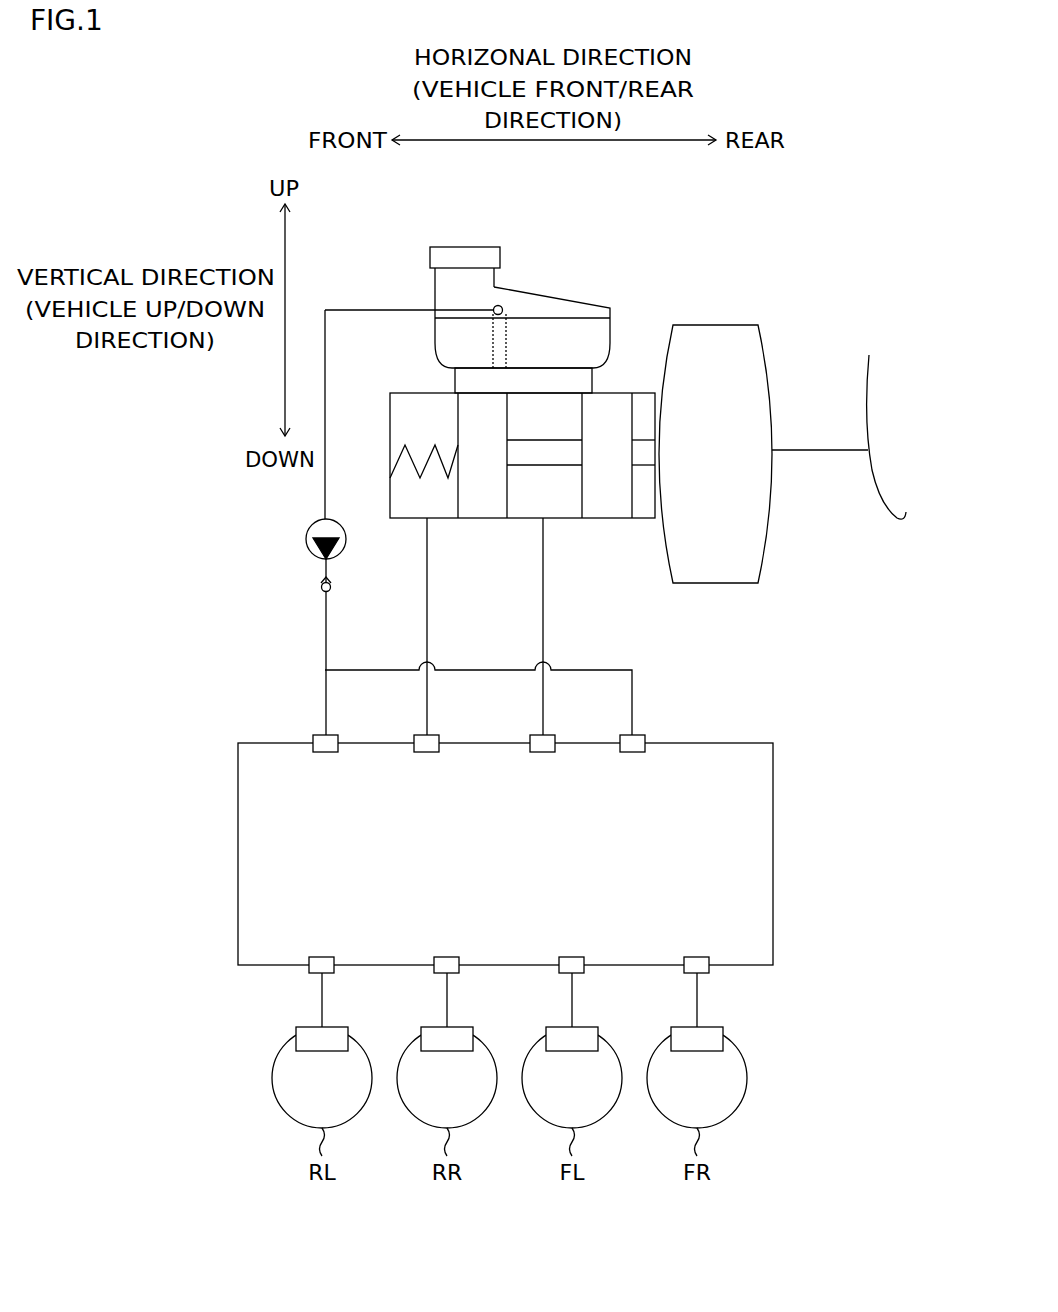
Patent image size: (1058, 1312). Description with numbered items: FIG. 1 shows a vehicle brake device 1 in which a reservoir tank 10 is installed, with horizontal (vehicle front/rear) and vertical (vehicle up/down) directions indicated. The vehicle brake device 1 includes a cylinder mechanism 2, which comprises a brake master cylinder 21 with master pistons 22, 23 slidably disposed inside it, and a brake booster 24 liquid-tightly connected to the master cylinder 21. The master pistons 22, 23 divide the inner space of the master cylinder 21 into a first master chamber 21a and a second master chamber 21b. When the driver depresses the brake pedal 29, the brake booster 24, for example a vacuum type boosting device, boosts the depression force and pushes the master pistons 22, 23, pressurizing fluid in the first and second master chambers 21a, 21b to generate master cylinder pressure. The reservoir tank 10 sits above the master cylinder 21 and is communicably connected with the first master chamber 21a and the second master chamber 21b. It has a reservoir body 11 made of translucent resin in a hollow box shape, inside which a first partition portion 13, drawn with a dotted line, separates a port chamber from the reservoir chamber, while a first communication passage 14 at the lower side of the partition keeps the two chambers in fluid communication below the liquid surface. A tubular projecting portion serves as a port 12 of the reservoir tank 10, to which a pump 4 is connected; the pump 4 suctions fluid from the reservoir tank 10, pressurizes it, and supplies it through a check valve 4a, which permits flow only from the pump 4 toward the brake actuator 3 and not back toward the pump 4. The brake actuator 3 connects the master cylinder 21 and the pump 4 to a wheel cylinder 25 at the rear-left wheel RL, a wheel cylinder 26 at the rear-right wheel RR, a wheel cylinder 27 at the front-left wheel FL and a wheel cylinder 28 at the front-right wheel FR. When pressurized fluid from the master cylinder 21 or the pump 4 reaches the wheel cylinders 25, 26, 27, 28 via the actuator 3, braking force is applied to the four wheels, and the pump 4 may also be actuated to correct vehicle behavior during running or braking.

The vehicle brake device 1 is at (882, 254).
The cylinder mechanism 2 is at (392, 360).
The brake actuator 3 is at (731, 742).
The pump 4 is at (318, 524).
The check valve 4a is at (321, 587).
The reservoir tank 10 is at (612, 246).
The reservoir body 11 is at (546, 295).
The port 12 is at (494, 306).
The first partition portion 13 is at (507, 336).
The first communication passage 14 is at (507, 358).
The brake master cylinder 21 is at (390, 463).
The first master chamber 21a is at (553, 490).
The second master chamber 21b is at (413, 492).
The master piston 22 is at (604, 514).
The master piston 23 is at (481, 514).
The brake booster 24 is at (722, 325).
The wheel cylinder 25 is at (307, 1027).
The wheel cylinder 26 is at (432, 1027).
The wheel cylinder 27 is at (557, 1027).
The wheel cylinder 28 is at (681, 1027).
The brake pedal 29 is at (905, 499).